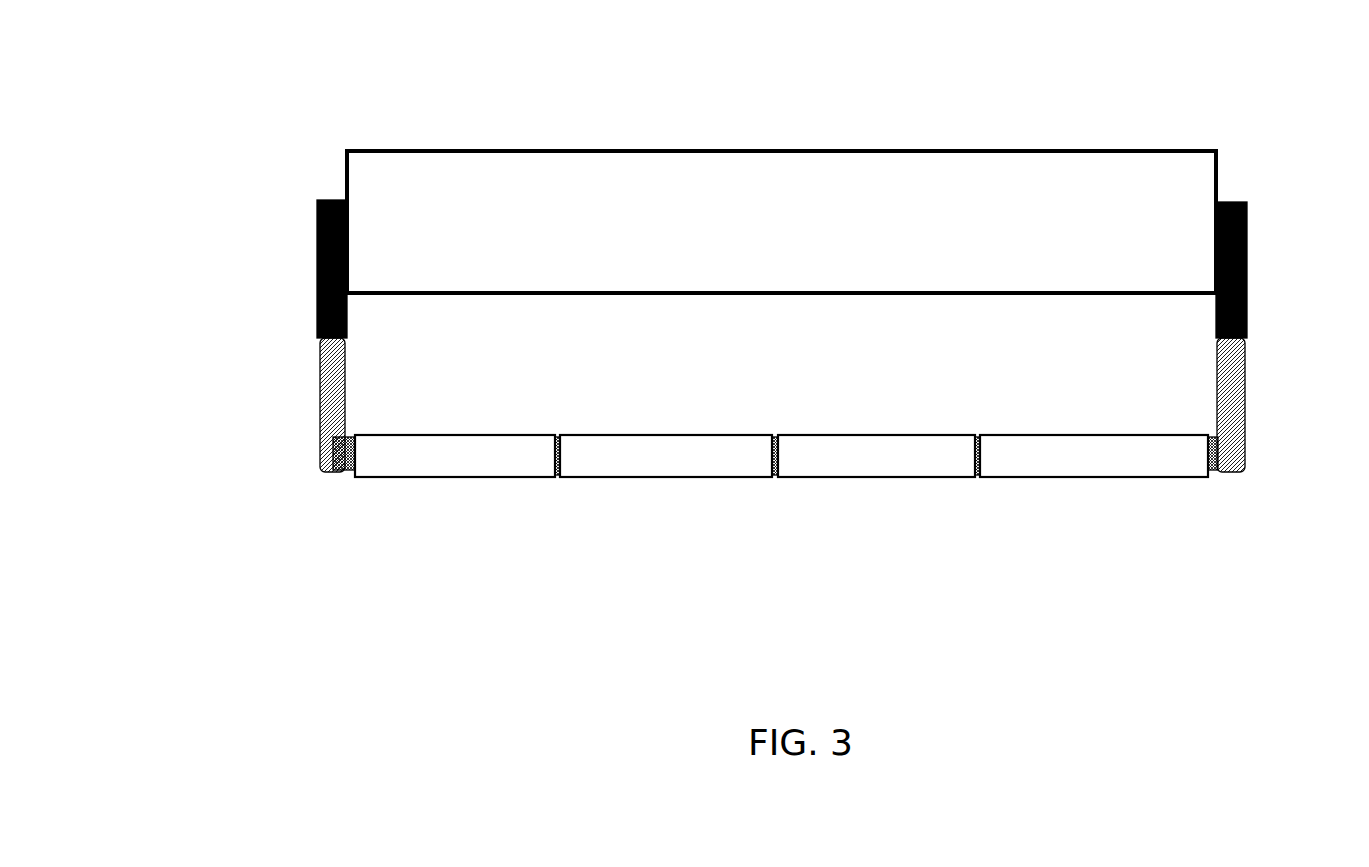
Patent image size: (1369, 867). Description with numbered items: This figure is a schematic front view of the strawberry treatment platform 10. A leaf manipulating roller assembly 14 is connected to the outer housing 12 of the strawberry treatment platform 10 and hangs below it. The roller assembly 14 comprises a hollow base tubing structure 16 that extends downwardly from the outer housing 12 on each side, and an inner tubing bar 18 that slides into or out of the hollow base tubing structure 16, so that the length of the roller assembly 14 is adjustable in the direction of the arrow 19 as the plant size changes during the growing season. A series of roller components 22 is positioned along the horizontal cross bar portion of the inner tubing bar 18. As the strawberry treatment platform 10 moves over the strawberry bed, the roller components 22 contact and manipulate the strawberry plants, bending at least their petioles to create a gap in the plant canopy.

The strawberry treatment platform 10 is at (153, 167).
The outer housing 12 is at (781, 222).
The leaf manipulating roller assembly 14 is at (232, 202).
The hollow base tubing structure 16 is at (318, 233).
The inner tubing bar 18 is at (318, 452).
The arrow 19 is at (277, 298).
The roller component 22 is at (487, 478).